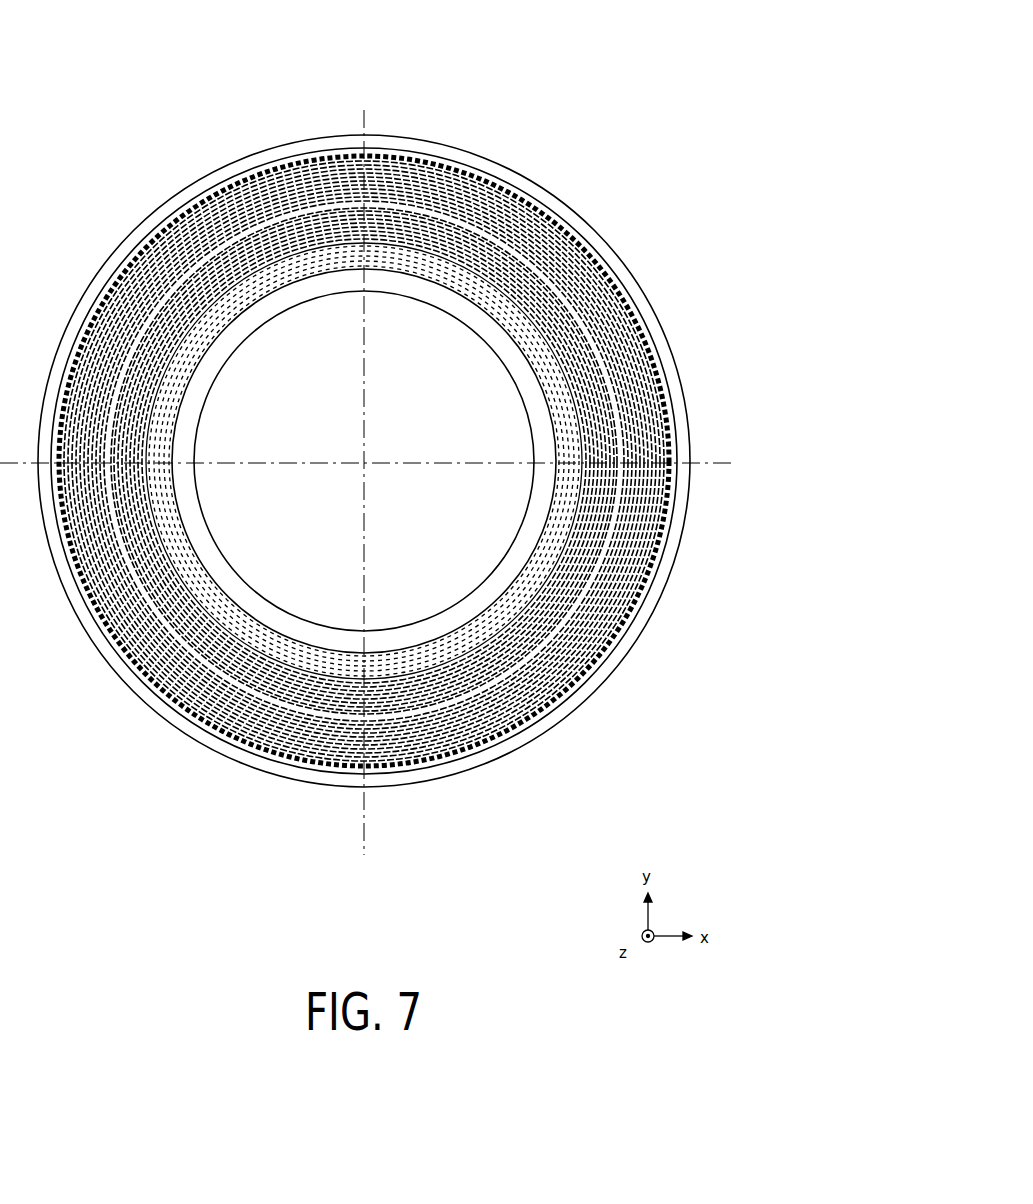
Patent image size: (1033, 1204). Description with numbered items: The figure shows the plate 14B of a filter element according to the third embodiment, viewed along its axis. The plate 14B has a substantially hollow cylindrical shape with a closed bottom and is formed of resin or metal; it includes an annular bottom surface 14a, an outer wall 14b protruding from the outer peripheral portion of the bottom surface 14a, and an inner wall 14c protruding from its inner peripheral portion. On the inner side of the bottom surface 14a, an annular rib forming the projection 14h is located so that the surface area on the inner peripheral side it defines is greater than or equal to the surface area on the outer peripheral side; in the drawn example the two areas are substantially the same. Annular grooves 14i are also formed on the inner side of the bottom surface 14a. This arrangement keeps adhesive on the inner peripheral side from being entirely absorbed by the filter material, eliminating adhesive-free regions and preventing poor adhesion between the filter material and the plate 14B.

The plate 14B is at (594, 101).
The annular bottom surface 14a is at (616, 648).
The outer wall 14b is at (622, 265).
The inner wall 14c is at (520, 373).
The projection 14h is at (645, 345).
The grooves 14i is at (605, 538).